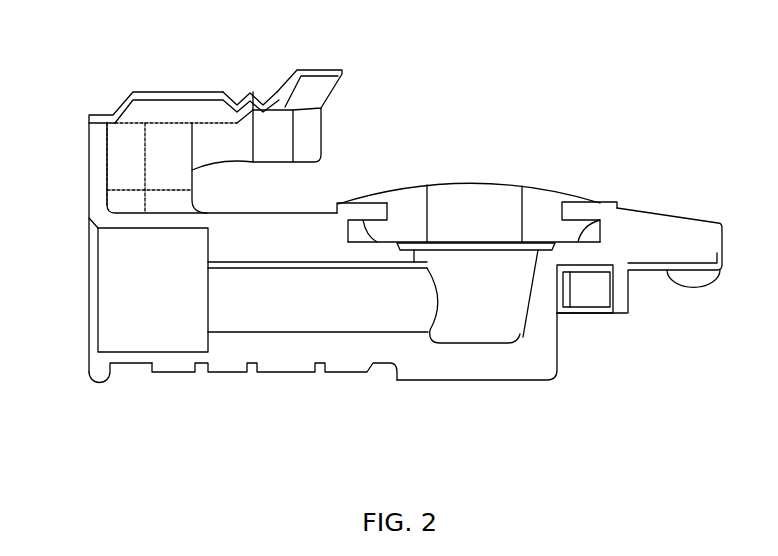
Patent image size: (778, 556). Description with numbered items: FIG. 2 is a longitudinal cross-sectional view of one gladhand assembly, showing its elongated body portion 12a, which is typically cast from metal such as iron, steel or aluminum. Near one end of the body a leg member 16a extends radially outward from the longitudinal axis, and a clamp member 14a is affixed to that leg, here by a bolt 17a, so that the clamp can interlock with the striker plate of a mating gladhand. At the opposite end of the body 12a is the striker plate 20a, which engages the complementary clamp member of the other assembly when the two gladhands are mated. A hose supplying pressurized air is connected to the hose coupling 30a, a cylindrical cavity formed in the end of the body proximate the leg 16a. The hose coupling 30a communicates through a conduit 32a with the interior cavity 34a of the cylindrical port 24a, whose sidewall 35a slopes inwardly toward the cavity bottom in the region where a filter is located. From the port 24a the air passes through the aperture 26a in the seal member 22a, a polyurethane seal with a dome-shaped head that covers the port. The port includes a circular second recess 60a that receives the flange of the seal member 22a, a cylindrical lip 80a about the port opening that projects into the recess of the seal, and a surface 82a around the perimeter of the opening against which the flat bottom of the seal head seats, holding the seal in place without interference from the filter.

The elongated body portion 12a is at (292, 383).
The clamp member 14a is at (255, 95).
The leg member 16a is at (88, 155).
The bolt 17a is at (134, 90).
The striker plate 20a is at (697, 222).
The seal member 22a is at (573, 193).
The cylindrical port 24a is at (604, 203).
The aperture 26a is at (463, 193).
The hose coupling 30a is at (88, 347).
The conduit 32a is at (398, 322).
The interior cavity 34a is at (502, 322).
The sidewall 35a is at (533, 310).
The second recess 60a is at (336, 203).
The cylindrical lip 80a is at (381, 207).
The surface 82a is at (373, 203).